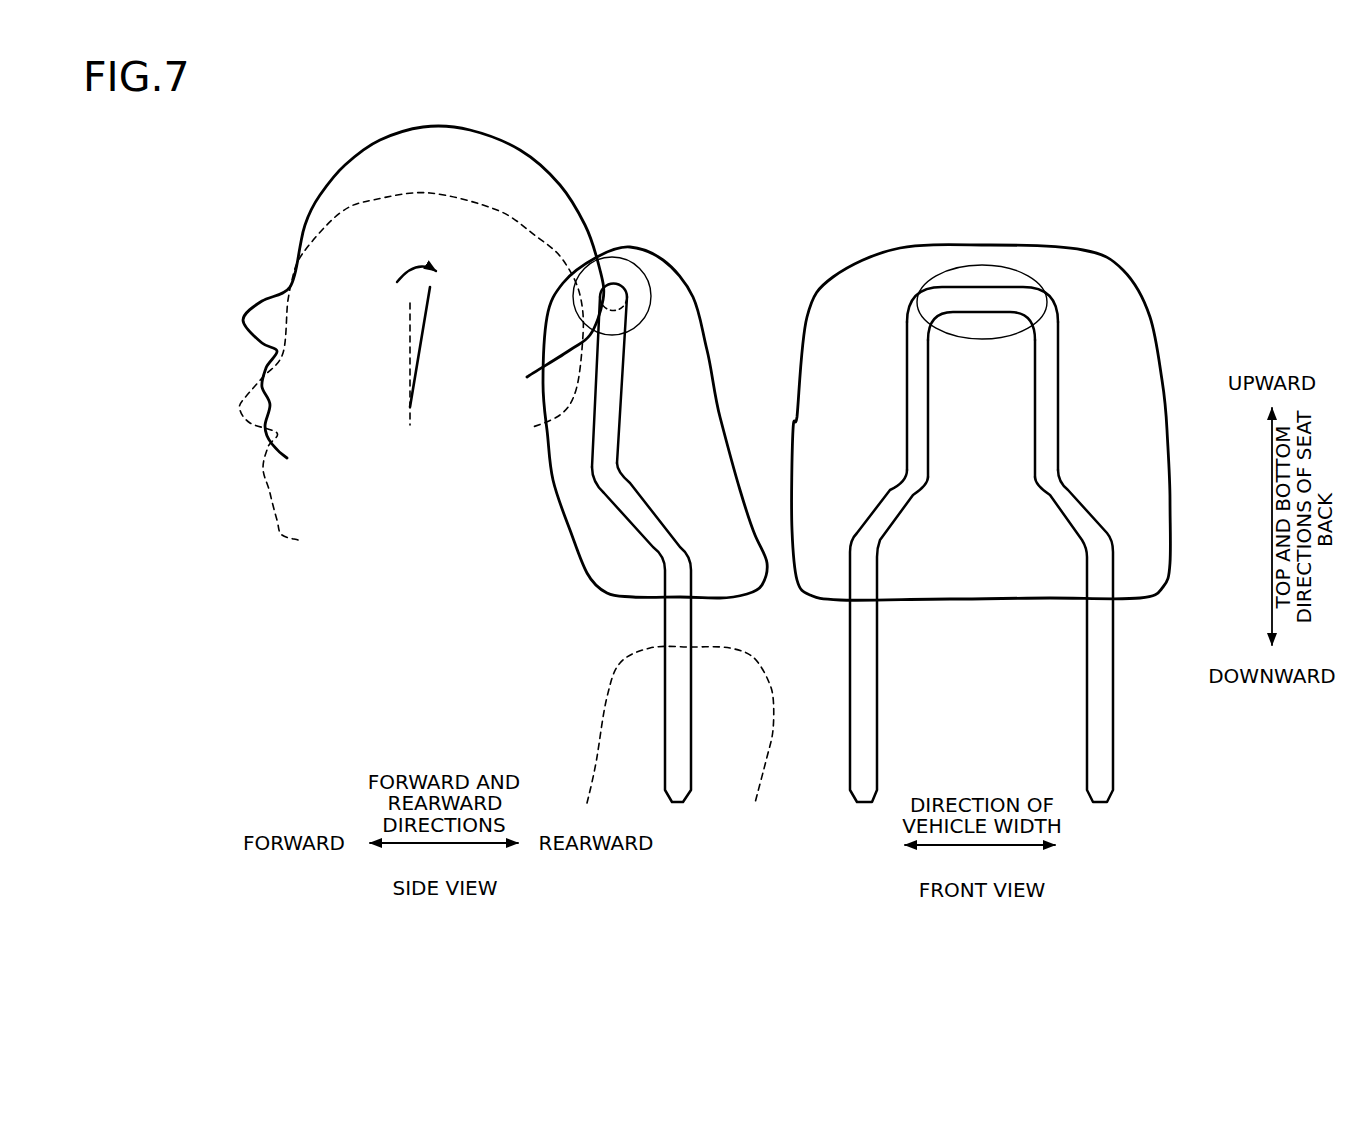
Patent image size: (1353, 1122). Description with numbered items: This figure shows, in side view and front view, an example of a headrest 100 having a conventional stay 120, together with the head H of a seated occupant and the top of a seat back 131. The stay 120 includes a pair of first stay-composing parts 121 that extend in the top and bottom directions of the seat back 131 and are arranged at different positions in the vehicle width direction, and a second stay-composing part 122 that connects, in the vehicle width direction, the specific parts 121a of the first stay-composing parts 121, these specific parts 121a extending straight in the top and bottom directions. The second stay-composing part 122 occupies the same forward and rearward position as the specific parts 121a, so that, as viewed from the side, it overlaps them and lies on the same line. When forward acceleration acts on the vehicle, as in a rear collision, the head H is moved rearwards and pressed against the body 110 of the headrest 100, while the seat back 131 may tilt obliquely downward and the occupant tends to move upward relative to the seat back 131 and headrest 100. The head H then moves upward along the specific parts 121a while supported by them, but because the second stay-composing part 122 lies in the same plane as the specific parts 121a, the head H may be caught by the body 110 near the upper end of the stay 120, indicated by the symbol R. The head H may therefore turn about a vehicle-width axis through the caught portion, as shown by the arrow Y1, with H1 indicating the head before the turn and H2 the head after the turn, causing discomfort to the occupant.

The head H is at (423, 126).
The head before the turn H1 is at (430, 193).
The head after the turn H2 is at (497, 138).
The arrow Y1 is at (412, 263).
The headrest 100 is at (630, 244).
The body 110 is at (693, 311).
The stay 120 is at (696, 820).
The first stay-composing part 121 is at (626, 381).
The specific part 121a is at (620, 438).
The second stay-composing part 122 is at (633, 287).
The upper end of the stay R is at (925, 282).
The seat back 131 is at (768, 732).